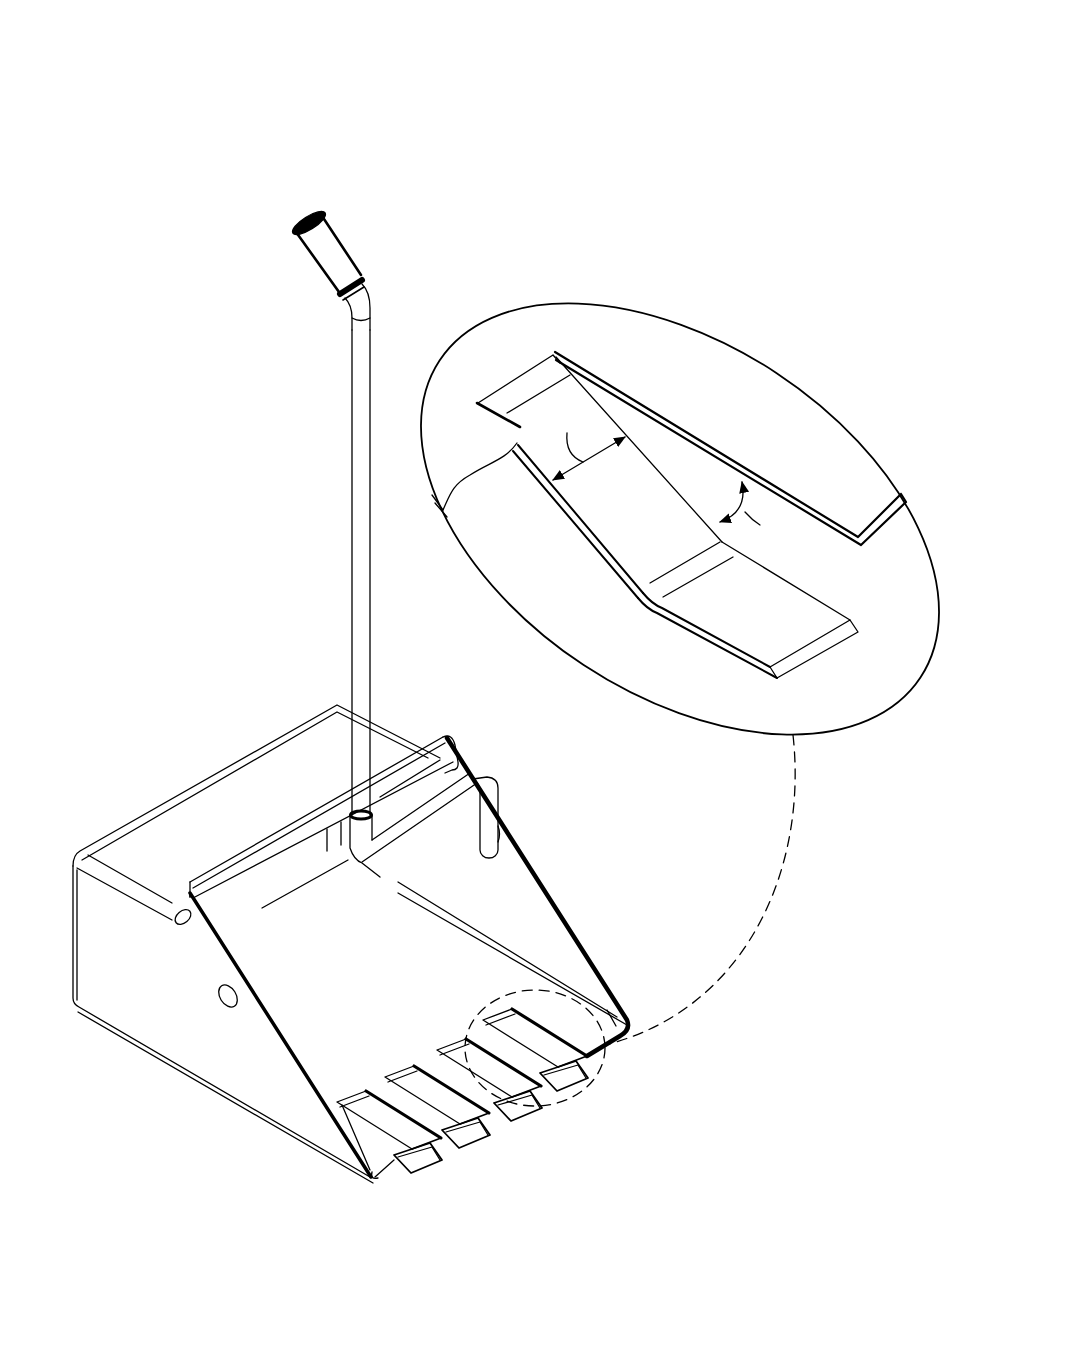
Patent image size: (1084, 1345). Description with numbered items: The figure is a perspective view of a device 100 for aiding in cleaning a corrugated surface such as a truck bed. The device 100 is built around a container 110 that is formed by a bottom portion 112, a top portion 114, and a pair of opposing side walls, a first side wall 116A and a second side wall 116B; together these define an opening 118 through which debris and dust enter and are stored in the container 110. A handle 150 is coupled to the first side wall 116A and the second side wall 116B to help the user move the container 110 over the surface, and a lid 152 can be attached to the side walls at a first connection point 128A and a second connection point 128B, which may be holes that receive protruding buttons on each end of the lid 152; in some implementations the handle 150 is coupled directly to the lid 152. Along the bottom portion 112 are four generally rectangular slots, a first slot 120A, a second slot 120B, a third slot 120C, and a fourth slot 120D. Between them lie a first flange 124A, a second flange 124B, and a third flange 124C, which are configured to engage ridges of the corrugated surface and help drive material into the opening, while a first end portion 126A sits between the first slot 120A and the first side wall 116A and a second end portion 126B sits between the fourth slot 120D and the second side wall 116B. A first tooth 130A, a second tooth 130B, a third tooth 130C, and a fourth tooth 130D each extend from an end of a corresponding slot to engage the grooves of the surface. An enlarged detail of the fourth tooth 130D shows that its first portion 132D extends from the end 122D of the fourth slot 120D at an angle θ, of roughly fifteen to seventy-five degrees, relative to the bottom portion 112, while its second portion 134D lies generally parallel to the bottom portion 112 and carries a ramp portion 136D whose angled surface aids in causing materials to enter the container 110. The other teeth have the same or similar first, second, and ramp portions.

The device 100 is at (198, 86).
The container 110 is at (195, 706).
The bottom portion 112 is at (623, 753).
The top portion 114 is at (185, 798).
The first side wall 116A is at (127, 997).
The second side wall 116B is at (557, 915).
The opening 118 is at (584, 934).
The first slot 120A is at (378, 1097).
The second slot 120B is at (423, 1064).
The third slot 120C is at (472, 1037).
The fourth slot 120D is at (513, 1011).
The end of the fourth slot 122D is at (527, 385).
The first flange 124A is at (440, 1118).
The second flange 124B is at (540, 1110).
The third flange 124C is at (595, 1090).
The first end portion 126A is at (394, 1168).
The second end portion 126B is at (600, 1033).
The first connection point 128A is at (222, 1003).
The second connection point 128B is at (503, 830).
The first tooth 130A is at (447, 1145).
The second tooth 130B is at (489, 1124).
The third tooth 130C is at (543, 1092).
The fourth tooth 130D is at (588, 1080).
The first portion 132D is at (583, 503).
The second portion 134D is at (720, 614).
The ramp portion 136D is at (828, 640).
The handle 150 is at (351, 438).
The lid 152 is at (473, 777).